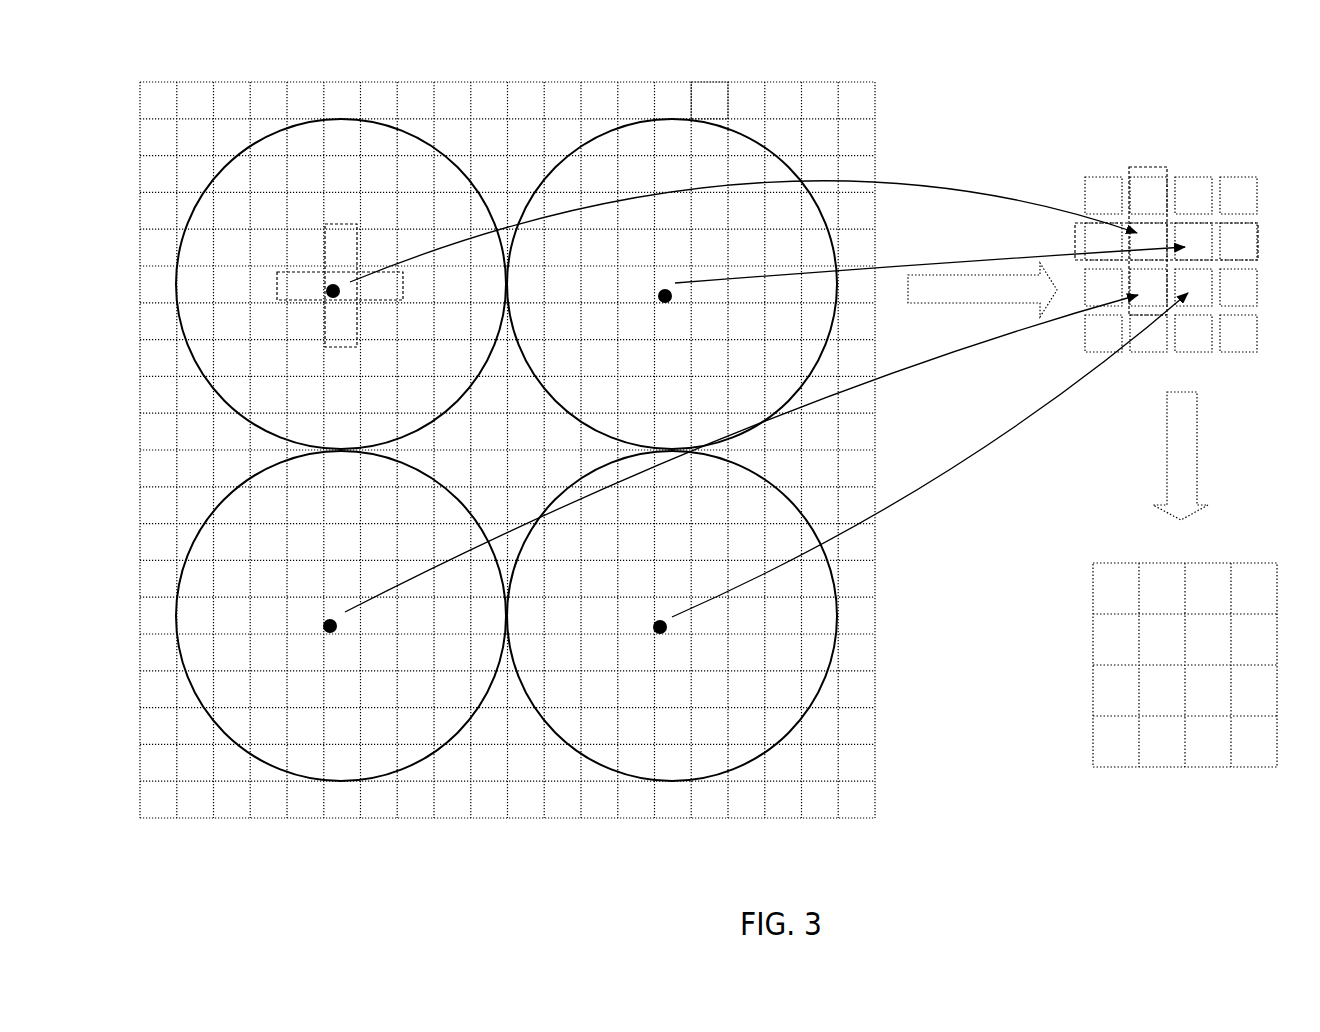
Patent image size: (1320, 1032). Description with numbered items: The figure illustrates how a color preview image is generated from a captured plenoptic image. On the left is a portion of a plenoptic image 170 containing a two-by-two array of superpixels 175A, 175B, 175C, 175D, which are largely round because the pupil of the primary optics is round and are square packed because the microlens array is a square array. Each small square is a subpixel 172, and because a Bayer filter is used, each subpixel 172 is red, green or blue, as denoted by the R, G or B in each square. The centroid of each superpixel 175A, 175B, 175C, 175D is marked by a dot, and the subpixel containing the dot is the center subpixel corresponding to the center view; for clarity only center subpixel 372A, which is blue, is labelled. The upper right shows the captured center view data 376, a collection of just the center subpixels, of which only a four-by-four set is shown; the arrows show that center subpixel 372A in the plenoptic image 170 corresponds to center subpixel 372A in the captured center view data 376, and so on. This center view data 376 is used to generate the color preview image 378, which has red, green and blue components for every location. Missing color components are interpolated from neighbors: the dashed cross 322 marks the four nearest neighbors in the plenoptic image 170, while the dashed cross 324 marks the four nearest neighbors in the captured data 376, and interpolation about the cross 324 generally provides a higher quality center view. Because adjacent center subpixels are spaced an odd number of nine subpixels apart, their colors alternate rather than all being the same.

The plenoptic image 170 is at (878, 110).
The subpixel 172 is at (706, 100).
The superpixel 175A is at (190, 213).
The superpixel 175B is at (590, 140).
The superpixel 175C is at (185, 553).
The superpixel 175D is at (583, 752).
The dashed cross 322 is at (340, 224).
The dashed cross 324 is at (1145, 167).
The center subpixel 372A is at (326, 283).
The captured center view data 376 is at (1207, 159).
The color preview image 378 is at (1248, 554).